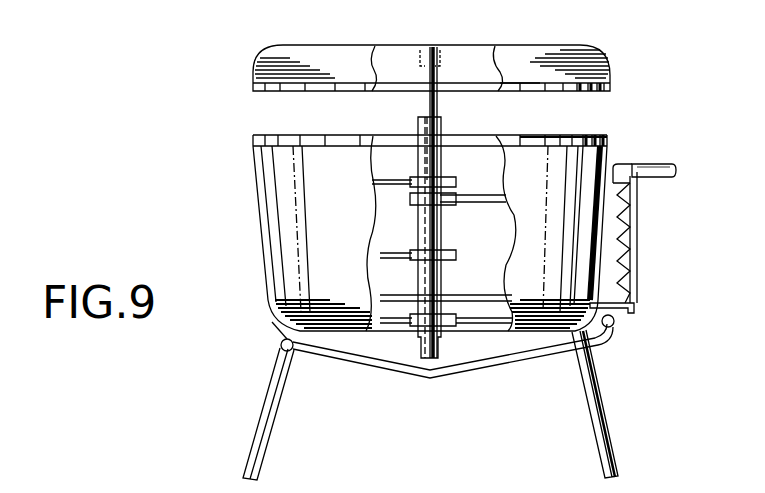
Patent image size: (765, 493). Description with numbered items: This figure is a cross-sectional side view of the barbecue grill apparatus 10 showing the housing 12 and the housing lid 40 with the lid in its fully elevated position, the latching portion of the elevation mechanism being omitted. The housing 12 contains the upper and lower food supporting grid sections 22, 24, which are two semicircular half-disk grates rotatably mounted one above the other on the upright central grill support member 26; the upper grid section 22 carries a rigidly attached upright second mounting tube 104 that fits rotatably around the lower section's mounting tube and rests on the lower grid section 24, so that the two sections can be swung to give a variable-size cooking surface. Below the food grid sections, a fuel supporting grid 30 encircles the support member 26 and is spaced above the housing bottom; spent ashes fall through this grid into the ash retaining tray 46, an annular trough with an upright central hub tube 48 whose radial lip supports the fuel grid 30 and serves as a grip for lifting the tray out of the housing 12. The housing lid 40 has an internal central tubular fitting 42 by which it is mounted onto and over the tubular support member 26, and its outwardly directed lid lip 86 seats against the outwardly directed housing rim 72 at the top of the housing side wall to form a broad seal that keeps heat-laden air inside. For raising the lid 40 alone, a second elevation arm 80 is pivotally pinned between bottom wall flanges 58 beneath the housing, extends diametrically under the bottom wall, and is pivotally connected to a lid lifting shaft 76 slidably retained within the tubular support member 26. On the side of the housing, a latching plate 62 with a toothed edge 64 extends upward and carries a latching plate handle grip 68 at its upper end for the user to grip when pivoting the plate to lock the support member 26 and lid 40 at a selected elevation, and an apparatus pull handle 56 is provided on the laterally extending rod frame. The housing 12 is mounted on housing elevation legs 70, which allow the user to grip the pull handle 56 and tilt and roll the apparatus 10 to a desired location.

The barbecue grill apparatus 10 is at (255, 228).
The housing 12 is at (263, 260).
The upper food supporting grid section 22 is at (392, 183).
The lower food supporting grid section 24 is at (470, 196).
The grill support member 26 is at (444, 225).
The fuel supporting grid 30 is at (392, 257).
The housing lid 40 is at (484, 44).
The internal central tubular fitting 42 is at (417, 56).
The ash retaining tray 46 is at (385, 293).
The upright central hub tube 48 is at (444, 273).
The apparatus pull handle 56 is at (636, 314).
The bottom wall flanges 58 is at (283, 335).
The latching plate 62 is at (632, 211).
The toothed edge 64 is at (620, 240).
The latching plate handle grip 68 is at (664, 166).
The housing elevation legs 70 is at (258, 440).
The housing rim 72 is at (578, 130).
The lid lifting shaft 76 is at (427, 106).
The second elevation arm 80 is at (500, 362).
The lid lip 86 is at (526, 89).
The second mounting tube 104 is at (441, 171).